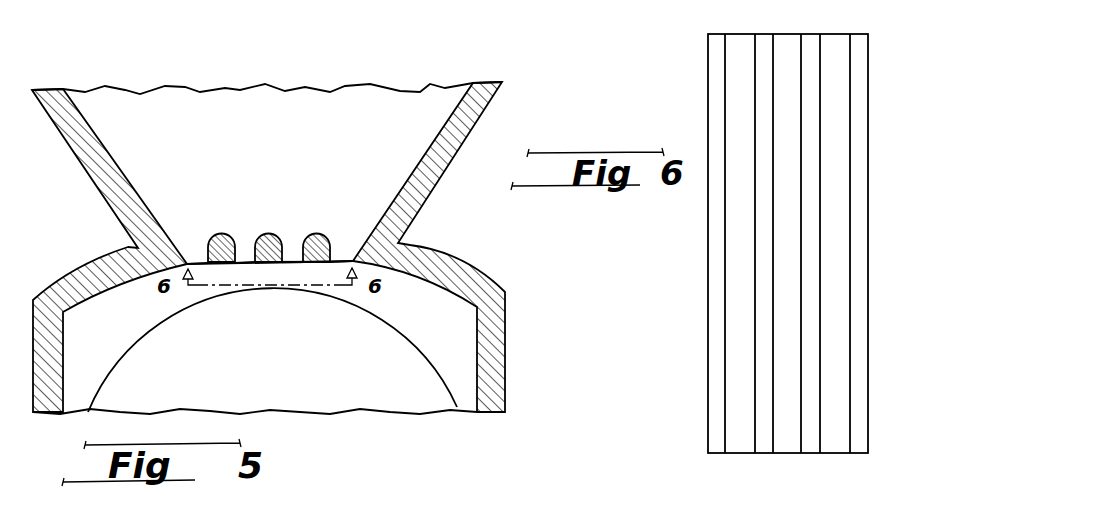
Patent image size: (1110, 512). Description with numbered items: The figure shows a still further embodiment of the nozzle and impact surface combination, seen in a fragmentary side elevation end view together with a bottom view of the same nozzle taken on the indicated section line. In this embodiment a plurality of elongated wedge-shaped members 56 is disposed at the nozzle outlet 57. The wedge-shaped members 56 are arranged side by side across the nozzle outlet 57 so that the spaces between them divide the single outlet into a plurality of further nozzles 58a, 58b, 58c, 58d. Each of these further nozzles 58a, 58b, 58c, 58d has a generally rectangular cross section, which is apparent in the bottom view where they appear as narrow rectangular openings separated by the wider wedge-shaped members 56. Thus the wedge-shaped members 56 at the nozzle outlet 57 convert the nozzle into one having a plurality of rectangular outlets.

In FIG. 5, the elongated wedge-shaped members 56 is at (223, 264).
In FIG. 6, the elongated wedge-shaped members 56 is at (780, 100).
In FIG. 5, the nozzle outlet 57 is at (185, 268).
In FIG. 5, the further nozzle 58a is at (185, 253).
In FIG. 6, the further nozzle 58a is at (718, 447).
In FIG. 5, the further nozzle 58b is at (250, 257).
In FIG. 6, the further nozzle 58b is at (765, 447).
In FIG. 5, the further nozzle 58c is at (290, 257).
In FIG. 6, the further nozzle 58c is at (812, 447).
In FIG. 5, the further nozzle 58d is at (340, 253).
In FIG. 6, the further nozzle 58d is at (860, 445).